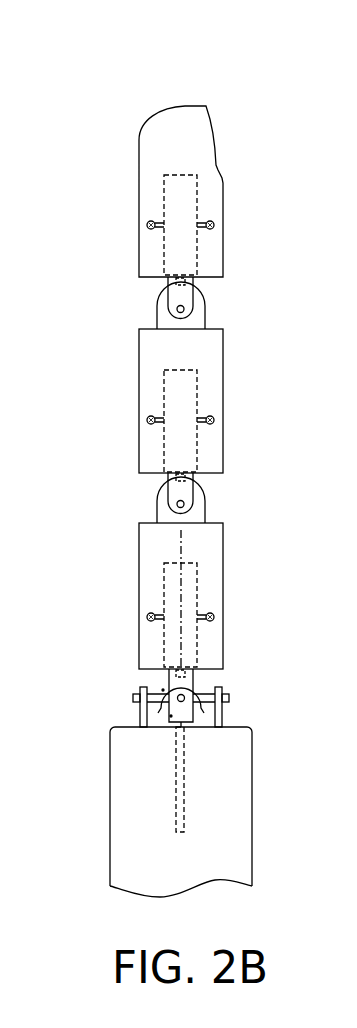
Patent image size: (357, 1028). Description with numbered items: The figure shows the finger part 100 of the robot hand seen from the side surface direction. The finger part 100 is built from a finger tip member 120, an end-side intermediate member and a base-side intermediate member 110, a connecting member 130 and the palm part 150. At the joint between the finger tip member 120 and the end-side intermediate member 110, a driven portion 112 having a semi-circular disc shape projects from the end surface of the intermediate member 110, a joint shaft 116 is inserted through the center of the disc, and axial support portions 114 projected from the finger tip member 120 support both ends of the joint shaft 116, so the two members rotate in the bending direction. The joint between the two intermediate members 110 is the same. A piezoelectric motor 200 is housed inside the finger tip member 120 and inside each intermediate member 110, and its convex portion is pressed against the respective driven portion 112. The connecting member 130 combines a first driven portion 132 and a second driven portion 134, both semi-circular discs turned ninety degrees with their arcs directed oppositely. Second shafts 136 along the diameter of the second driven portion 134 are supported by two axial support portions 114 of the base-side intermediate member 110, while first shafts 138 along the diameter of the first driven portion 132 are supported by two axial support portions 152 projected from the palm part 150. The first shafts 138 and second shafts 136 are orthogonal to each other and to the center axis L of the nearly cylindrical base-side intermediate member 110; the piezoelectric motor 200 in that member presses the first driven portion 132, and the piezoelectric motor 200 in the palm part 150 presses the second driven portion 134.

The finger part 100 is at (169, 79).
The finger tip member 120 is at (223, 183).
The intermediate member 110 is at (223, 562).
The piezoelectric motor 200 is at (197, 205).
The axial support portion 114 is at (200, 281).
The driven portion 112 is at (205, 291).
The joint shaft 116 is at (177, 309).
The center axis L is at (181, 548).
The connecting member 130 is at (62, 632).
The first driven portion 132 is at (160, 688).
The first shaft 138 is at (158, 706).
The second shaft 136 is at (134, 698).
The second driven portion 134 is at (168, 718).
The axial support portion 152 is at (140, 728).
The palm part 150 is at (110, 812).